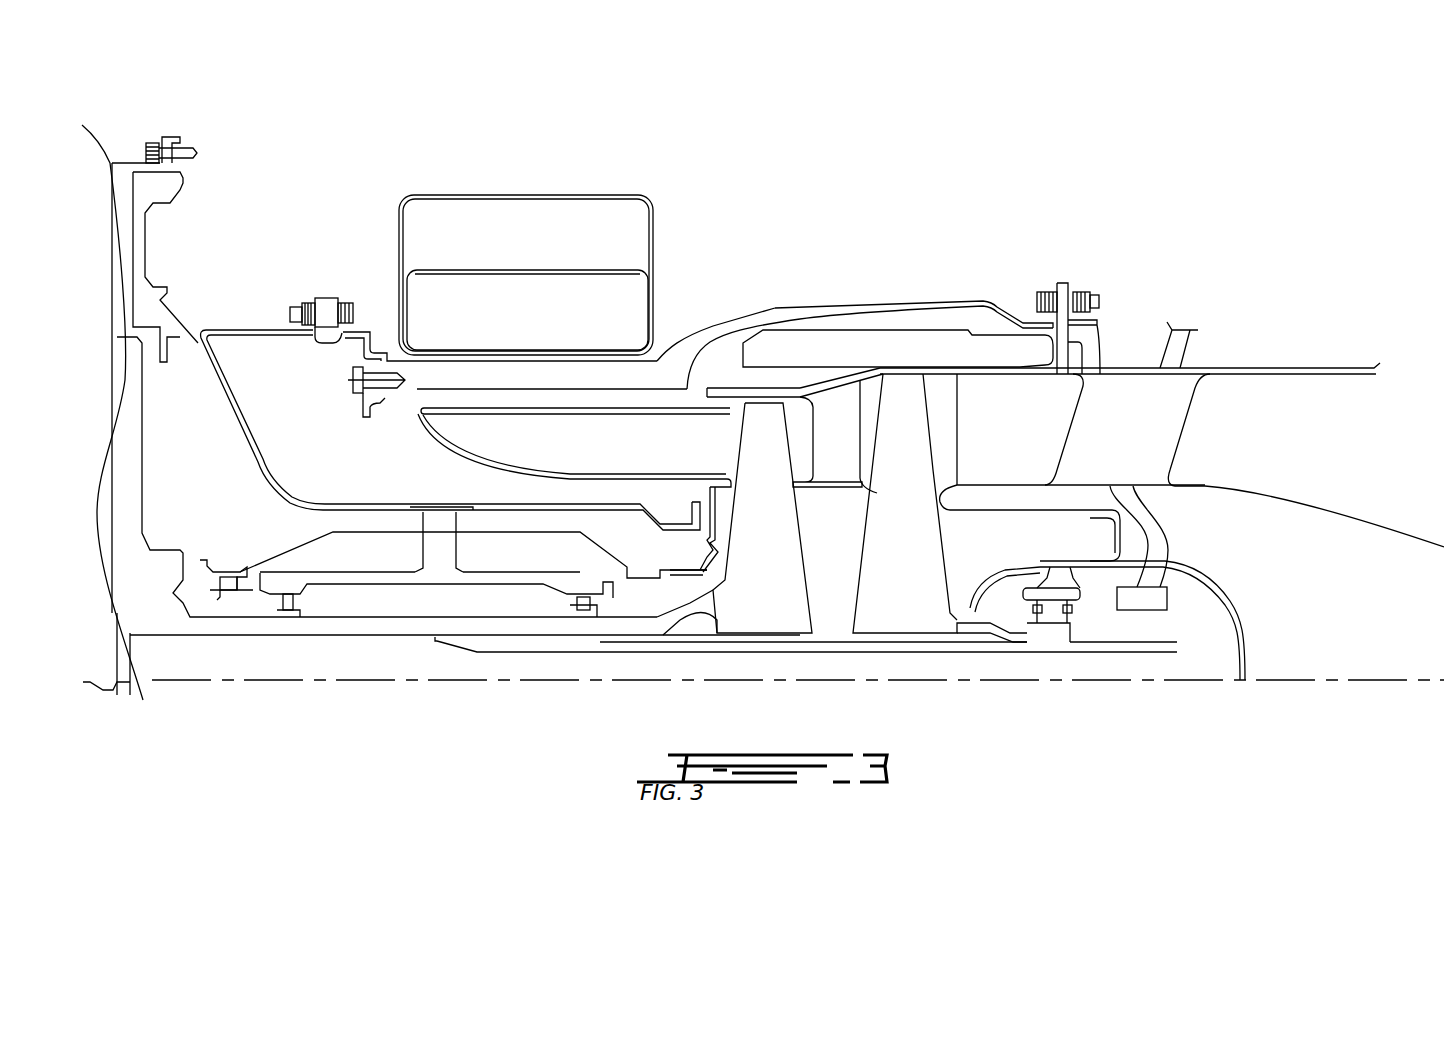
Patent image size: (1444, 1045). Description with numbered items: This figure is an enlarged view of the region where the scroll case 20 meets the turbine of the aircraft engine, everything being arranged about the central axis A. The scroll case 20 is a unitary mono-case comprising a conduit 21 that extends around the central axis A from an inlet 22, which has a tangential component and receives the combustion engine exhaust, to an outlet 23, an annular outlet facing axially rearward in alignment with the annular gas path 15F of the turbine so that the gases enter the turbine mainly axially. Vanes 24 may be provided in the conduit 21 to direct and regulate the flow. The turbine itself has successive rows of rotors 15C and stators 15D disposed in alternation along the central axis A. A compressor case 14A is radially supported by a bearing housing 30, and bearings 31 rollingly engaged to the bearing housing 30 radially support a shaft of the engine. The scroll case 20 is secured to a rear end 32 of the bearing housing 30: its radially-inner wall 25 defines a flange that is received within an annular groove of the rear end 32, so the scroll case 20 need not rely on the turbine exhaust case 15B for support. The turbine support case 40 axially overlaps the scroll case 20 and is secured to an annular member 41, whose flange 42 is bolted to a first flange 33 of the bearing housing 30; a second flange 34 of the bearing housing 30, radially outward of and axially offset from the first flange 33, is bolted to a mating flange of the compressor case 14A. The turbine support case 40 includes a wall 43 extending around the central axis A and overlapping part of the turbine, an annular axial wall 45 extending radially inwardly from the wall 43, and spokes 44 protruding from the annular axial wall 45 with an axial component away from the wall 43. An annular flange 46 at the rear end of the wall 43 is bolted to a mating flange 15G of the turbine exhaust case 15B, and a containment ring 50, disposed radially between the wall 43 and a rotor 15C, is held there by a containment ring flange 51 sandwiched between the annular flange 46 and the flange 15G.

The compressor case 14A is at (132, 170).
The second flange 34 is at (192, 157).
The first flange 33 is at (323, 312).
The flange 42 is at (338, 336).
The annular member 41 is at (382, 420).
The spokes 44 is at (567, 385).
The inlet 22 is at (526, 237).
The conduit 21 is at (466, 298).
The scroll case 20 is at (855, 258).
The annular axial wall 45 is at (672, 381).
The wall 43 is at (920, 298).
The turbine support case 40 is at (798, 284).
The containment ring 50 is at (840, 347).
The flange 15G is at (1075, 285).
The annular flange 46 is at (1060, 287).
The containment ring flange 51 is at (1070, 318).
The turbine exhaust case 15B is at (1304, 366).
The annular gas path 15F is at (1035, 455).
The rotors 15C is at (763, 447).
The stators 15D is at (840, 447).
The outlet 23 is at (705, 447).
The vanes 24 is at (505, 417).
The radially-inner wall 25 is at (446, 446).
The bearing housing 30 is at (688, 537).
The rear end 32 is at (670, 500).
The bearings 31 is at (289, 625).
The central axis A is at (1378, 683).